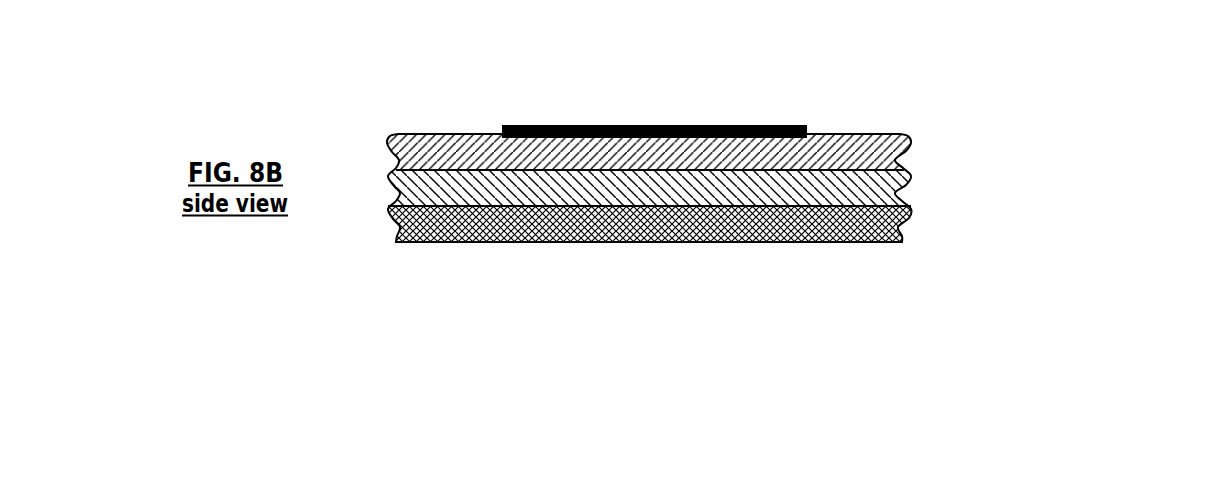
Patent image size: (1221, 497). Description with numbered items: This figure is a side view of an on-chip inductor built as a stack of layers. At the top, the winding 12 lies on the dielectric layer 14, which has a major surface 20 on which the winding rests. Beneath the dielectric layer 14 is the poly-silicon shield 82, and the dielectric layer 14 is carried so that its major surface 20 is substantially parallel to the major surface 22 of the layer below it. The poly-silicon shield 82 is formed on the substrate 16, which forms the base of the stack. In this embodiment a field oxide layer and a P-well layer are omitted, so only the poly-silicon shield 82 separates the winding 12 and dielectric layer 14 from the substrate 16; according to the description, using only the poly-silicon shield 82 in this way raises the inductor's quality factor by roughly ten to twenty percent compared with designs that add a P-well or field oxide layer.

The winding 12 is at (613, 115).
The dielectric layer 14 is at (902, 98).
The substrate 16 is at (865, 256).
The major surface 20 is at (452, 128).
The major surface 22 is at (432, 162).
The poly-silicon shield 82 is at (930, 189).